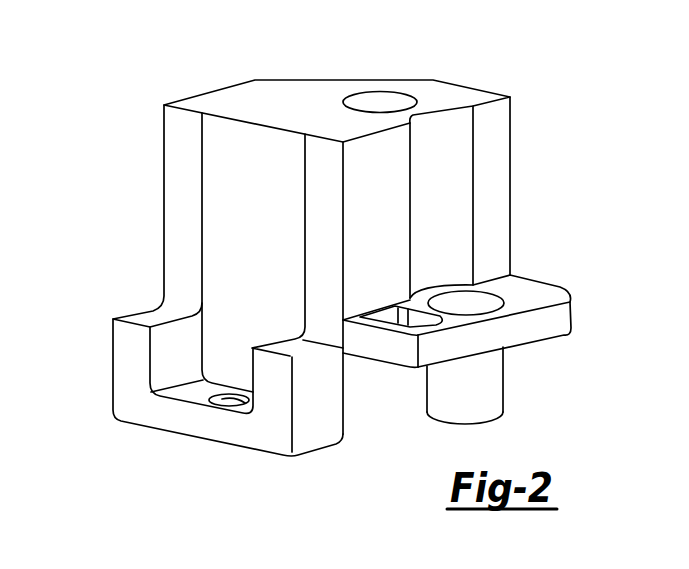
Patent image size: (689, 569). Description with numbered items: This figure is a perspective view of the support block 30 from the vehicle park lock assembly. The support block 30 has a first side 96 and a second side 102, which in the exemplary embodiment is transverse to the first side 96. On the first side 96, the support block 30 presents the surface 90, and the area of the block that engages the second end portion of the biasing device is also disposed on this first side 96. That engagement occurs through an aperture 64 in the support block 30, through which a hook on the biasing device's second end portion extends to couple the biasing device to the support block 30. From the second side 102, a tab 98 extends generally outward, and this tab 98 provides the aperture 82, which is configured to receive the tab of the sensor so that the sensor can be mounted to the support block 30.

The support block 30 is at (471, 58).
The first side 96 is at (136, 131).
The surface 90 is at (243, 217).
The aperture 64 is at (228, 400).
The second side 102 is at (546, 210).
The tab 98 is at (537, 293).
The aperture 82 is at (443, 307).